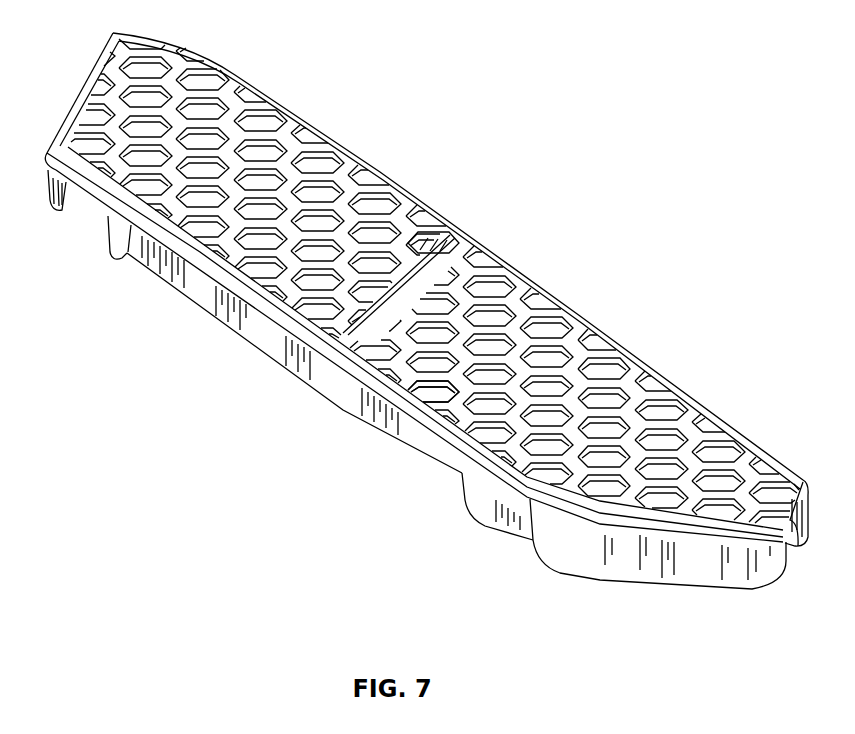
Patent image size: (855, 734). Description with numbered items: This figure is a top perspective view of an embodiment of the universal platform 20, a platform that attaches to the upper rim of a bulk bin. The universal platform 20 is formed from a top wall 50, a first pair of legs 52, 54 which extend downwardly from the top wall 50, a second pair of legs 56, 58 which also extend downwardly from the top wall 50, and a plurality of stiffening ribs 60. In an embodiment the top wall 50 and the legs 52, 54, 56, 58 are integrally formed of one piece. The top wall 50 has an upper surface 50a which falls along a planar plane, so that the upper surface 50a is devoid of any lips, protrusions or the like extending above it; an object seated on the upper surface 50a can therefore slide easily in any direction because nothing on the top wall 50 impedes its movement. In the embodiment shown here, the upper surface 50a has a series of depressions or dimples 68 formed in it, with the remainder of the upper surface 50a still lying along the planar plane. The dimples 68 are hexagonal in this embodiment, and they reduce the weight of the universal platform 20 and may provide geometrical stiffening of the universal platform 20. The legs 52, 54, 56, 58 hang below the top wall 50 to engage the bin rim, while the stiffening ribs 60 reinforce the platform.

The universal platform 20 is at (605, 268).
The top wall 50 is at (377, 253).
The upper surface 50a is at (473, 333).
The leg 52 is at (47, 200).
The leg 54 is at (127, 258).
The leg 56 is at (602, 570).
The leg 58 is at (480, 513).
The stiffening rib 60 is at (343, 393).
The dimples 68 is at (497, 313).